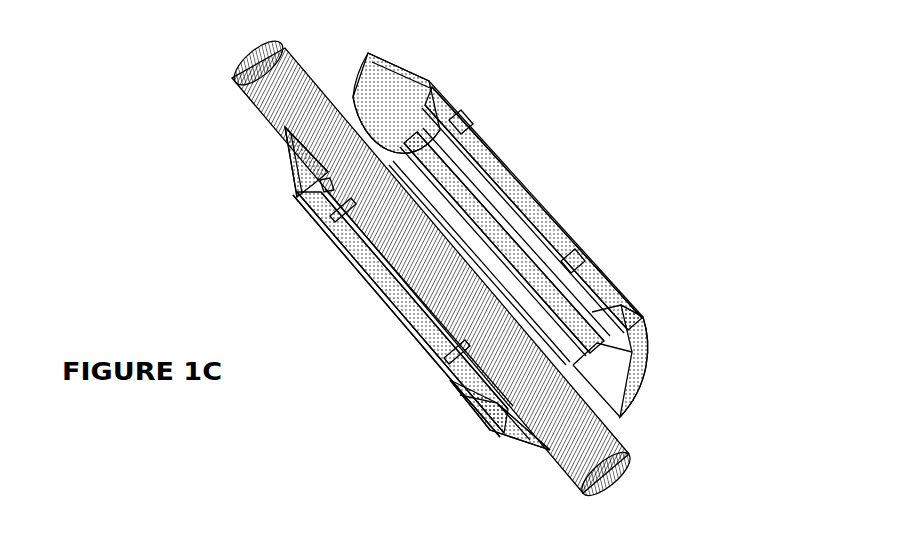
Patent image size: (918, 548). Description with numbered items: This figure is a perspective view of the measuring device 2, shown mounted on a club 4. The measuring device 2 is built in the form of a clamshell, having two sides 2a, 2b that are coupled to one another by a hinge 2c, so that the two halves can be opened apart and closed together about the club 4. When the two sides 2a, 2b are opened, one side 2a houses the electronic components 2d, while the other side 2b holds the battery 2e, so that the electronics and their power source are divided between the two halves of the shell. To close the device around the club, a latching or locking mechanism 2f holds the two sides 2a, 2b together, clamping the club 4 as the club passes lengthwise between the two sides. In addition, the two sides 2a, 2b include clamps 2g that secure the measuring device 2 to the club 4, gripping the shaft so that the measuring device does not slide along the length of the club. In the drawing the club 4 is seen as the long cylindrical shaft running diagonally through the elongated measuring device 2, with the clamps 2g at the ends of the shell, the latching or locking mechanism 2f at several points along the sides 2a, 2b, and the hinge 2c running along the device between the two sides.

The measuring device 2 is at (636, 54).
The side 2a is at (295, 197).
The side 2b is at (440, 82).
The hinge 2c is at (482, 188).
The electronic components 2d is at (365, 287).
The battery 2e is at (500, 203).
The latching or locking mechanism 2f is at (333, 217).
The clamps 2g is at (400, 65).
The club 4 is at (240, 86).